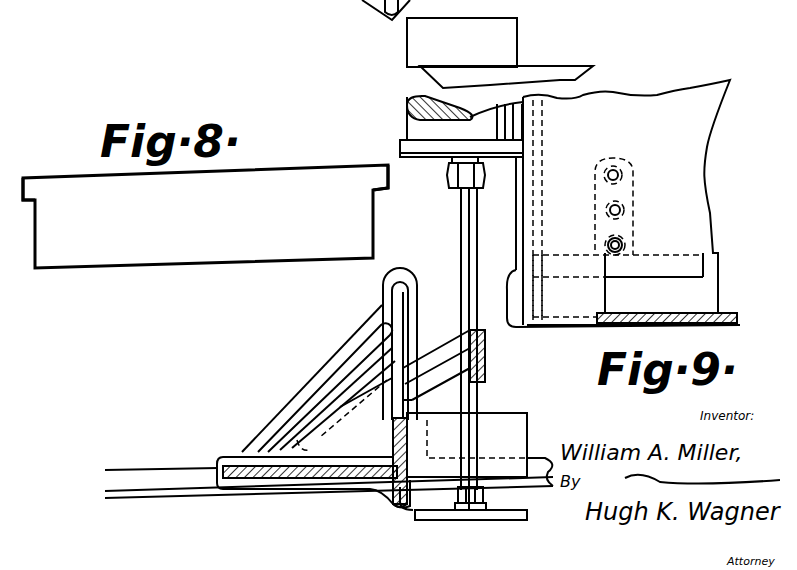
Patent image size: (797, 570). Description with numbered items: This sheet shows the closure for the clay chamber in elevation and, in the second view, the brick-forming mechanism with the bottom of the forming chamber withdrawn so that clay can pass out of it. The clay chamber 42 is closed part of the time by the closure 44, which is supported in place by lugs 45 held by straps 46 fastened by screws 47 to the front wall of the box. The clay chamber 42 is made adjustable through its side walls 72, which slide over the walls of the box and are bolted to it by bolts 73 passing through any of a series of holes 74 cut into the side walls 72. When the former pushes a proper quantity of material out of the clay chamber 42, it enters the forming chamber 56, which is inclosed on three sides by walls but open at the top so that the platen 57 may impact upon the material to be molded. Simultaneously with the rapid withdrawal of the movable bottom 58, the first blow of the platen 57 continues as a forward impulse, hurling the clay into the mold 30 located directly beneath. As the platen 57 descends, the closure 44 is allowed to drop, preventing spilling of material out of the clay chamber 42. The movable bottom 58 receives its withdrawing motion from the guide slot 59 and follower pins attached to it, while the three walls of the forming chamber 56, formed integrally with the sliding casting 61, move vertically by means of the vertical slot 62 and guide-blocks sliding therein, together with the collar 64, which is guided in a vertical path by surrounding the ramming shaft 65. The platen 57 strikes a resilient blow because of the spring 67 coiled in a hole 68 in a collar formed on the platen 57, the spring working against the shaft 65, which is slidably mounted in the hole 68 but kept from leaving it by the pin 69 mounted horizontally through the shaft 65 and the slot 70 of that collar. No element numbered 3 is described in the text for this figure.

In FIG. 9, the channel member 3 is at (530, 72).
In FIG. 9, the mold 30 is at (462, 42).
In FIG. 9, the clay chamber 42 is at (680, 297).
In FIG. 8, the closure 44 is at (205, 216).
In FIG. 9, the closure 44 is at (527, 300).
In FIG. 8, the lugs 45 is at (36, 191).
In FIG. 9, the lugs 45 is at (512, 240).
In FIG. 9, the straps 46 is at (508, 215).
In FIG. 9, the screws 47 is at (518, 164).
In FIG. 9, the forming chamber 56 is at (218, 455).
In FIG. 9, the platen 57 is at (507, 520).
In FIG. 9, the movable bottom 58 is at (272, 477).
In FIG. 9, the guide slot 59 is at (345, 380).
In FIG. 9, the sliding casting 61 is at (344, 414).
In FIG. 9, the vertical slot 62 is at (382, 303).
In FIG. 9, the collar 64 is at (470, 345).
In FIG. 9, the ramming shaft 65 is at (461, 290).
In FIG. 9, the spring 67 is at (472, 505).
In FIG. 9, the hole 68 is at (487, 504).
In FIG. 9, the pin 69 is at (483, 467).
In FIG. 9, the slot 70 is at (465, 495).
In FIG. 9, the side walls 72 is at (477, 439).
In FIG. 9, the bolts 73 is at (627, 247).
In FIG. 9, the holes 74 is at (623, 210).